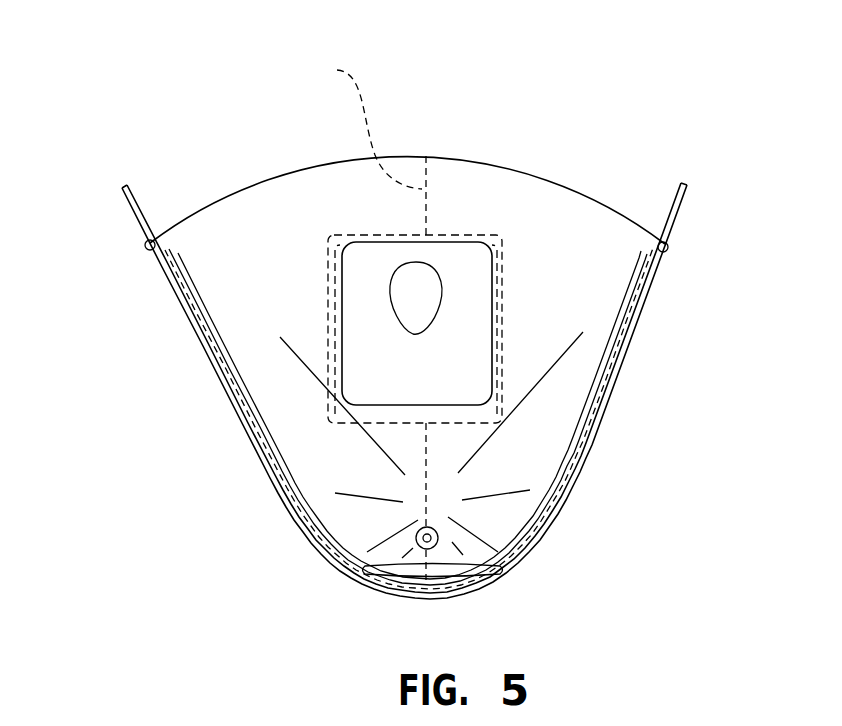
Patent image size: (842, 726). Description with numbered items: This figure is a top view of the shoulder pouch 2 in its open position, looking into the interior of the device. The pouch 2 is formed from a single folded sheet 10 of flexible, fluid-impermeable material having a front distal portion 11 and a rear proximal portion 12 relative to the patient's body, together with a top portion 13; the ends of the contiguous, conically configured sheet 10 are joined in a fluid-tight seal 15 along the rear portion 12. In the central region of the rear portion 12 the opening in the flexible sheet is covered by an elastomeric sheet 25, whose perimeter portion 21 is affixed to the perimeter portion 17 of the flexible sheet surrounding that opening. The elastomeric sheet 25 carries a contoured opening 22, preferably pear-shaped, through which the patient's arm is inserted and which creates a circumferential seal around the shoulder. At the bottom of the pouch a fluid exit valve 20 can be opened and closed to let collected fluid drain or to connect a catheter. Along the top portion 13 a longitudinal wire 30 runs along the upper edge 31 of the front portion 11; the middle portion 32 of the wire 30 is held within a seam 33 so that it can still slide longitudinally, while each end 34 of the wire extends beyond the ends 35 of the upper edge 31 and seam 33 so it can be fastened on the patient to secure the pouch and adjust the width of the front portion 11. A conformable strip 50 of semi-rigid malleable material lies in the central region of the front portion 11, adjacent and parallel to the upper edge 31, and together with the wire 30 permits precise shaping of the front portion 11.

The shoulder pouch 2 is at (565, 182).
The flexible sheet 10 is at (615, 214).
The front distal portion 11 is at (507, 515).
The rear proximal portion 12 is at (495, 197).
The top portion 13 is at (587, 360).
The fluid-tight seal 15 is at (363, 125).
The perimeter portion of the flexible sheet 17 is at (462, 252).
The fluid exit valve 20 is at (443, 532).
The perimeter portion of the elastomeric sheet 21 is at (346, 266).
The contoured opening 22 is at (423, 296).
The elastomeric sheet 25 is at (368, 282).
The longitudinal wire 30 is at (592, 436).
The upper edge 31 is at (612, 405).
The middle portion of the wire 32 is at (512, 573).
The seam 33 is at (572, 480).
The wire ends 34 is at (133, 190).
The ends of the upper edge 35 is at (148, 244).
The conformable strip 50 is at (368, 574).